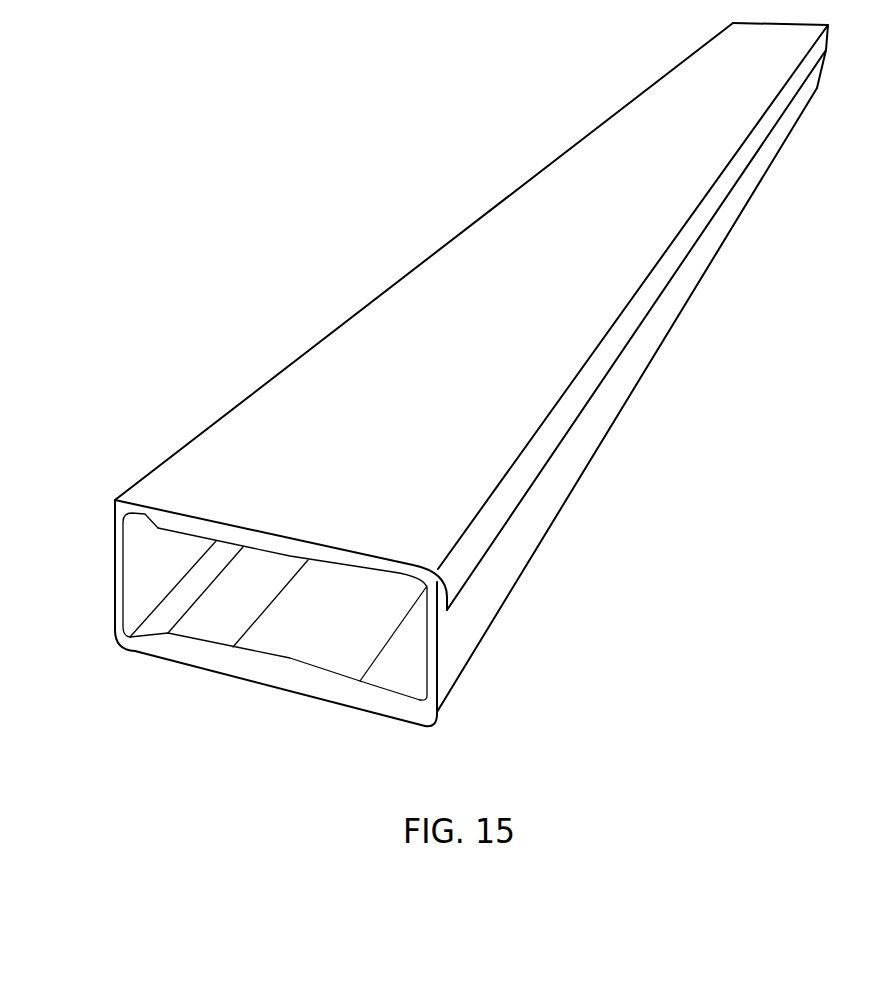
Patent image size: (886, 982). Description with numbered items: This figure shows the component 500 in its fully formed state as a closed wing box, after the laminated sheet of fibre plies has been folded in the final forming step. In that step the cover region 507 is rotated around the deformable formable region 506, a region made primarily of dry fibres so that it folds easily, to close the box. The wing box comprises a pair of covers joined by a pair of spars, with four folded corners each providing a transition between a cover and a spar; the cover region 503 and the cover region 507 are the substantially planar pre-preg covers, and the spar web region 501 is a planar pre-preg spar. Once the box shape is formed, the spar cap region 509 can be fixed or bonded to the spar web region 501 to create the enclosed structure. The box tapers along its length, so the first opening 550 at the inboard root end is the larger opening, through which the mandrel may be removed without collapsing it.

The component 500 is at (724, 507).
The spar web region 501 is at (460, 628).
The cover region 503 is at (312, 653).
The formable region 506 is at (115, 500).
The cover region 507 is at (352, 449).
The spar cap region 509 is at (517, 487).
The first opening 550 is at (342, 621).